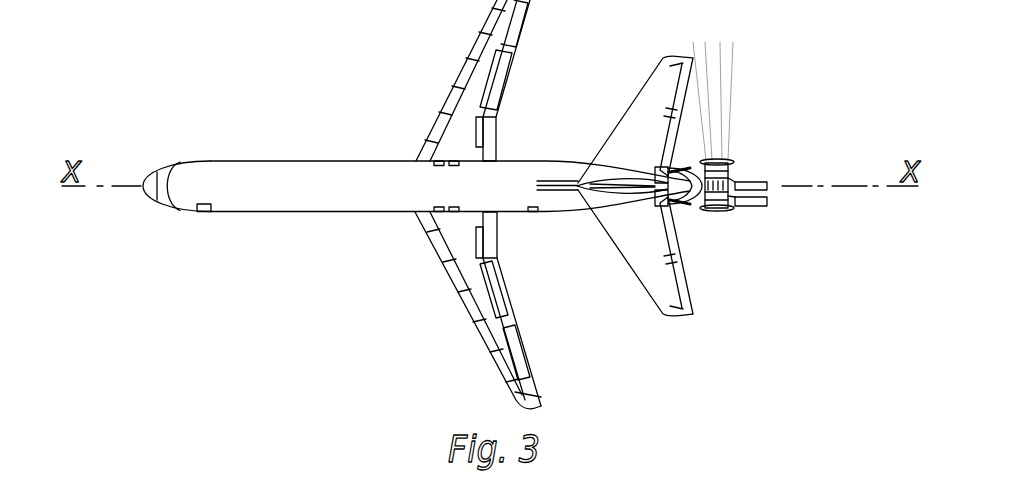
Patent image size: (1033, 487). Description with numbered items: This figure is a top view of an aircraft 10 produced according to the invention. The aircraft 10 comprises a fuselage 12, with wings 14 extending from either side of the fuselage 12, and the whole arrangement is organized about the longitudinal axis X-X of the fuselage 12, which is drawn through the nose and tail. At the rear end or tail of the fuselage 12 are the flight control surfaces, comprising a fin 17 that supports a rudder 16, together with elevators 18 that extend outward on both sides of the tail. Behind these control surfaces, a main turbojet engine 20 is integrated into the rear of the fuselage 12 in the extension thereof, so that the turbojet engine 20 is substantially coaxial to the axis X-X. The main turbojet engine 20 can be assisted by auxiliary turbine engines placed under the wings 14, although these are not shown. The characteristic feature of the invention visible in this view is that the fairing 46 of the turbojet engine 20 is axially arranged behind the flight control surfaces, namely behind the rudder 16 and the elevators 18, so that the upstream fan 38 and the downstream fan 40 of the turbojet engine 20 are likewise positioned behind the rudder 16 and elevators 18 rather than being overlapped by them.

The aircraft 10 is at (268, 78).
The fuselage 12 is at (336, 193).
The wings 14 is at (466, 250).
The rudder 16 is at (675, 133).
The fin 17 is at (583, 200).
The elevators 18 is at (676, 268).
The turbojet engine 20 is at (739, 151).
The upstream fan 38 is at (704, 160).
The downstream fan 40 is at (738, 173).
The fairing 46 is at (717, 213).